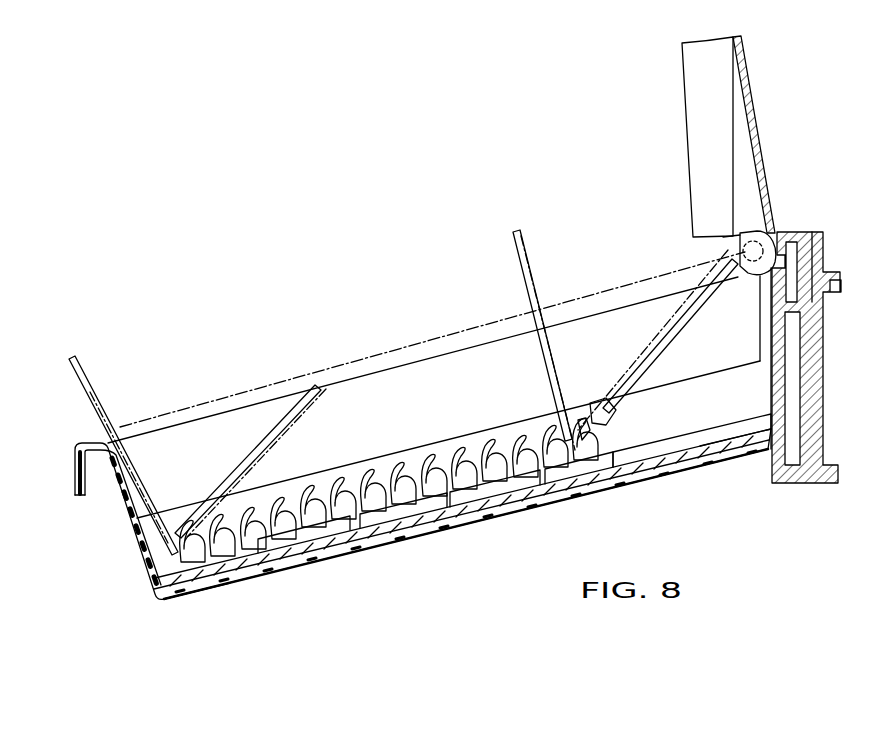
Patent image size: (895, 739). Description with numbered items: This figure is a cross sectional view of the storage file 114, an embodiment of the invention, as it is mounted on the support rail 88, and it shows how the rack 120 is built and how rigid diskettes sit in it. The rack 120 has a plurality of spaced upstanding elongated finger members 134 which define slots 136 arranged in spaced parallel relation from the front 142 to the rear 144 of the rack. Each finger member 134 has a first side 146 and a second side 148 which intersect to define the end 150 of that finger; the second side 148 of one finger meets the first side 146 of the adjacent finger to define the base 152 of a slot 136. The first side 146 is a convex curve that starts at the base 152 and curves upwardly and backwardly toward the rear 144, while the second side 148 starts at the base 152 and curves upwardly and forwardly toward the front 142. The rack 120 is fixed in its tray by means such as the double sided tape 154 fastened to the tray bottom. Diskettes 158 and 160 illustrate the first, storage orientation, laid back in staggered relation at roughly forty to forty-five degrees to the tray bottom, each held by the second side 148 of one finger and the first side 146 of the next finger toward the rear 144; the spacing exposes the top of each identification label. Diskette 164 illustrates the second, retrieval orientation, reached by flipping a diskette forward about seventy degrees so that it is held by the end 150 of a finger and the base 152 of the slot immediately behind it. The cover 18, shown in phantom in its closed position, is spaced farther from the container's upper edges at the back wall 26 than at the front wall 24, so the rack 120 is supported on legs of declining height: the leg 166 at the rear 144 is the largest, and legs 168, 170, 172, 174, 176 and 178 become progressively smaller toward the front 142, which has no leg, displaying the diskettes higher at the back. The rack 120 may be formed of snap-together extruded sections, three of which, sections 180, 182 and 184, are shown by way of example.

The cover 18 is at (743, 53).
The front wall 24 is at (124, 511).
The back wall 26 is at (770, 331).
The support rail 88 is at (824, 237).
The storage file 114 is at (296, 582).
The rack 120 is at (623, 397).
The finger member 134 is at (373, 483).
The slot 136 is at (357, 490).
The front 142 is at (150, 532).
The rear 144 is at (626, 425).
The first side 146 is at (257, 508).
The second side 148 is at (327, 495).
The end 150 is at (290, 492).
The base 152 is at (417, 477).
The double sided tape 154 is at (726, 432).
The rigid diskette 158 is at (685, 310).
The rigid diskette 160 is at (282, 423).
The diskette 164 is at (532, 282).
The leg 166 is at (612, 460).
The leg 168 is at (547, 473).
The leg 170 is at (522, 482).
The leg 172 is at (443, 510).
The leg 174 is at (362, 533).
The leg 176 is at (340, 537).
The leg 178 is at (262, 572).
The extruded section 180 is at (231, 477).
The extruded section 182 is at (462, 450).
The extruded section 184 is at (598, 397).